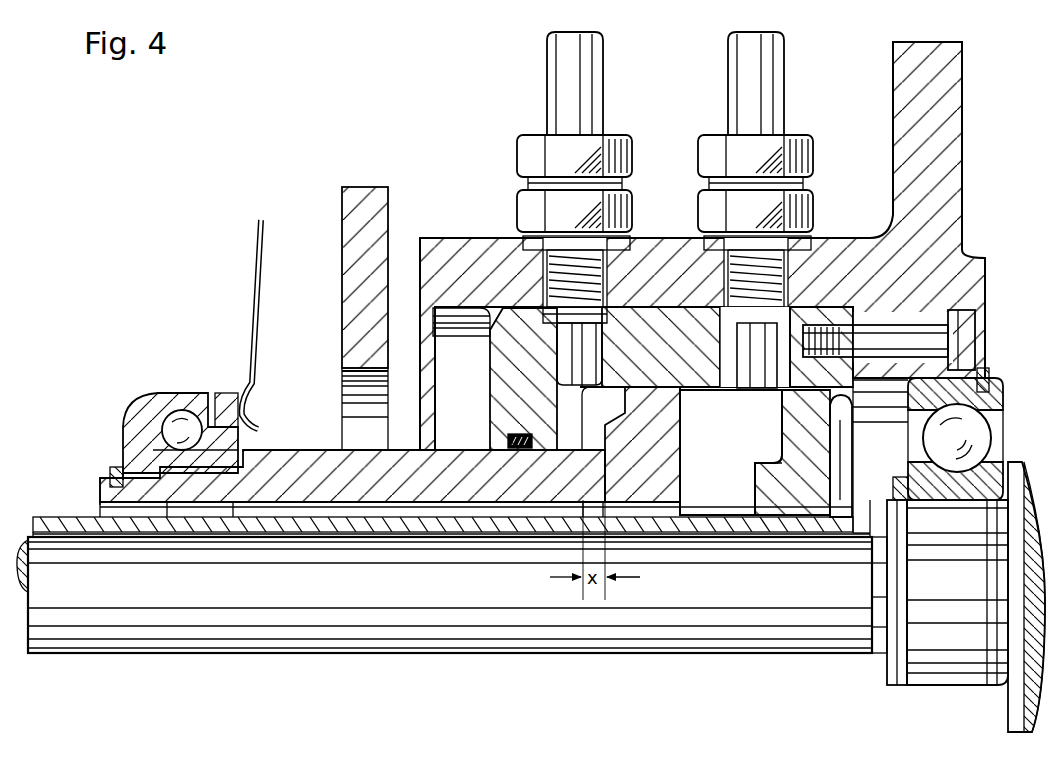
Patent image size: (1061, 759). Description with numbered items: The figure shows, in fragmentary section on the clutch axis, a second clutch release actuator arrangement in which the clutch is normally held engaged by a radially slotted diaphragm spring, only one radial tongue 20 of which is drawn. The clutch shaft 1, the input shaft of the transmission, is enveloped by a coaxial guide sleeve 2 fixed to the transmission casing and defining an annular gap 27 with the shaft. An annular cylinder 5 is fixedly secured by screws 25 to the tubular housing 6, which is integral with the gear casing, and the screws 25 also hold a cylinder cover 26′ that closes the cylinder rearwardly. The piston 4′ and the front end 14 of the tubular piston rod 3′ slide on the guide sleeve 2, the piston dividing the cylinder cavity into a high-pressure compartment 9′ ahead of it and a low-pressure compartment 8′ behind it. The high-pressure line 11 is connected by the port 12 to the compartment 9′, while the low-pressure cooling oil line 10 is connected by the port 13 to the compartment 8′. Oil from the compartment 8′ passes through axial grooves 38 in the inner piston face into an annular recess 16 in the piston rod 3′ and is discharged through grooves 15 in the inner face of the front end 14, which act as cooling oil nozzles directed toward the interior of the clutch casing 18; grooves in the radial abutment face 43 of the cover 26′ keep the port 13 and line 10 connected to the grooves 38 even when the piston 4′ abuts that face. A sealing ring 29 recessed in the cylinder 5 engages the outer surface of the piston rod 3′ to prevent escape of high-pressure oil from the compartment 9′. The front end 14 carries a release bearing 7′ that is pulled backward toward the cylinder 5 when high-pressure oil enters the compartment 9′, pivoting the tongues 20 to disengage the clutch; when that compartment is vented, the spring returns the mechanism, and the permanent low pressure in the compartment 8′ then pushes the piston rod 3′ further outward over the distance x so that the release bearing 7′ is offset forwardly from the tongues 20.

The clutch shaft 1 is at (238, 605).
The guide sleeve 2 is at (405, 522).
The piston rod 3′ is at (297, 463).
The piston 4′ is at (653, 447).
The cylinder 5 is at (520, 398).
The housing 6 is at (468, 262).
The release bearing 7′ is at (134, 384).
The low-pressure compartment 8′ is at (717, 493).
The high-pressure compartment 9′ is at (603, 410).
The cooling oil line 10 is at (744, 70).
The high-pressure line 11 is at (562, 69).
The port 12 is at (566, 355).
The port 13 is at (695, 330).
The front end 14 is at (140, 497).
The grooves 15 is at (167, 535).
The annular recess 16 is at (347, 503).
The clutch casing 18 is at (362, 227).
The tongue 20 is at (262, 246).
The screws 25 is at (890, 330).
The cylinder cover 26′ is at (805, 480).
The annular gap 27 is at (458, 507).
The sealing ring 29 is at (520, 448).
The axial grooves 38 is at (657, 492).
The radial abutment face 43 is at (752, 478).